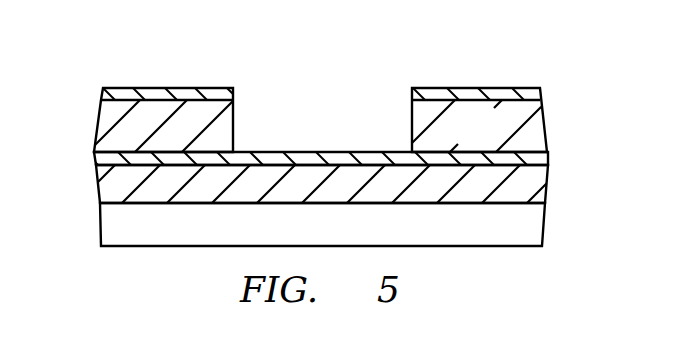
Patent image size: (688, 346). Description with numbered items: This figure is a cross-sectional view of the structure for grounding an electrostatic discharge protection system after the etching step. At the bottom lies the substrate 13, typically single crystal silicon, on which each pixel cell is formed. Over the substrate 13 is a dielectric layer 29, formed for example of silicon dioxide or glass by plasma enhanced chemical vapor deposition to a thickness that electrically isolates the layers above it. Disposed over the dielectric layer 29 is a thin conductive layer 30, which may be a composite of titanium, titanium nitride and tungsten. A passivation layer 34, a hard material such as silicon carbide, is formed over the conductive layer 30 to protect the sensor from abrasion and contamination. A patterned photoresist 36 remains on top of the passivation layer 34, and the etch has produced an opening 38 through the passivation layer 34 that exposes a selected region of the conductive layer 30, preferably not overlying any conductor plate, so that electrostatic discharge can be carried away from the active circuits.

The substrate 13 is at (503, 237).
The dielectric layer 29 is at (108, 183).
The conductive layer 30 is at (549, 154).
The passivation layer 34 is at (461, 138).
The photoresist 36 is at (168, 88).
The opening 38 is at (319, 118).